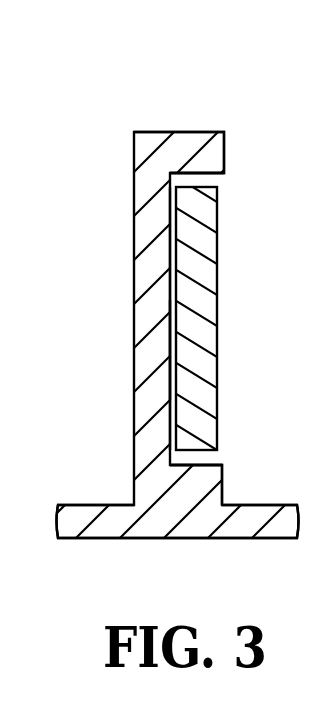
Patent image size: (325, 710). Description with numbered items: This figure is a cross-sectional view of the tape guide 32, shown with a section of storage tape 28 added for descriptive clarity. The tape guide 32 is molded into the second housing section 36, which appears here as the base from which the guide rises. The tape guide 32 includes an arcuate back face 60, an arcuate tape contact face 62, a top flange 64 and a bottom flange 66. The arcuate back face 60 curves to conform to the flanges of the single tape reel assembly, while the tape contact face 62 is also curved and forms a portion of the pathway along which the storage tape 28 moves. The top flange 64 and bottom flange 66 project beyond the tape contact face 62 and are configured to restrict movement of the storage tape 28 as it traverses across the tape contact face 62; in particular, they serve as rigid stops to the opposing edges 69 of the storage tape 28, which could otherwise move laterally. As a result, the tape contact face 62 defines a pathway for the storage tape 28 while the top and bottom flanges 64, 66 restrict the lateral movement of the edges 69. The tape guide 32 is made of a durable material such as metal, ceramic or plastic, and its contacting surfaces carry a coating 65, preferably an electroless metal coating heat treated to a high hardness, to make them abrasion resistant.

The tape guide 32 is at (157, 74).
The top flange 64 is at (188, 150).
The opposing edges of the storage tape 69 is at (195, 187).
The storage tape 28 is at (196, 310).
The coating 65 is at (172, 353).
The tape contact face 62 is at (172, 410).
The arcuate back face 60 is at (133, 270).
The bottom flange 66 is at (180, 483).
The second housing section 36 is at (93, 520).